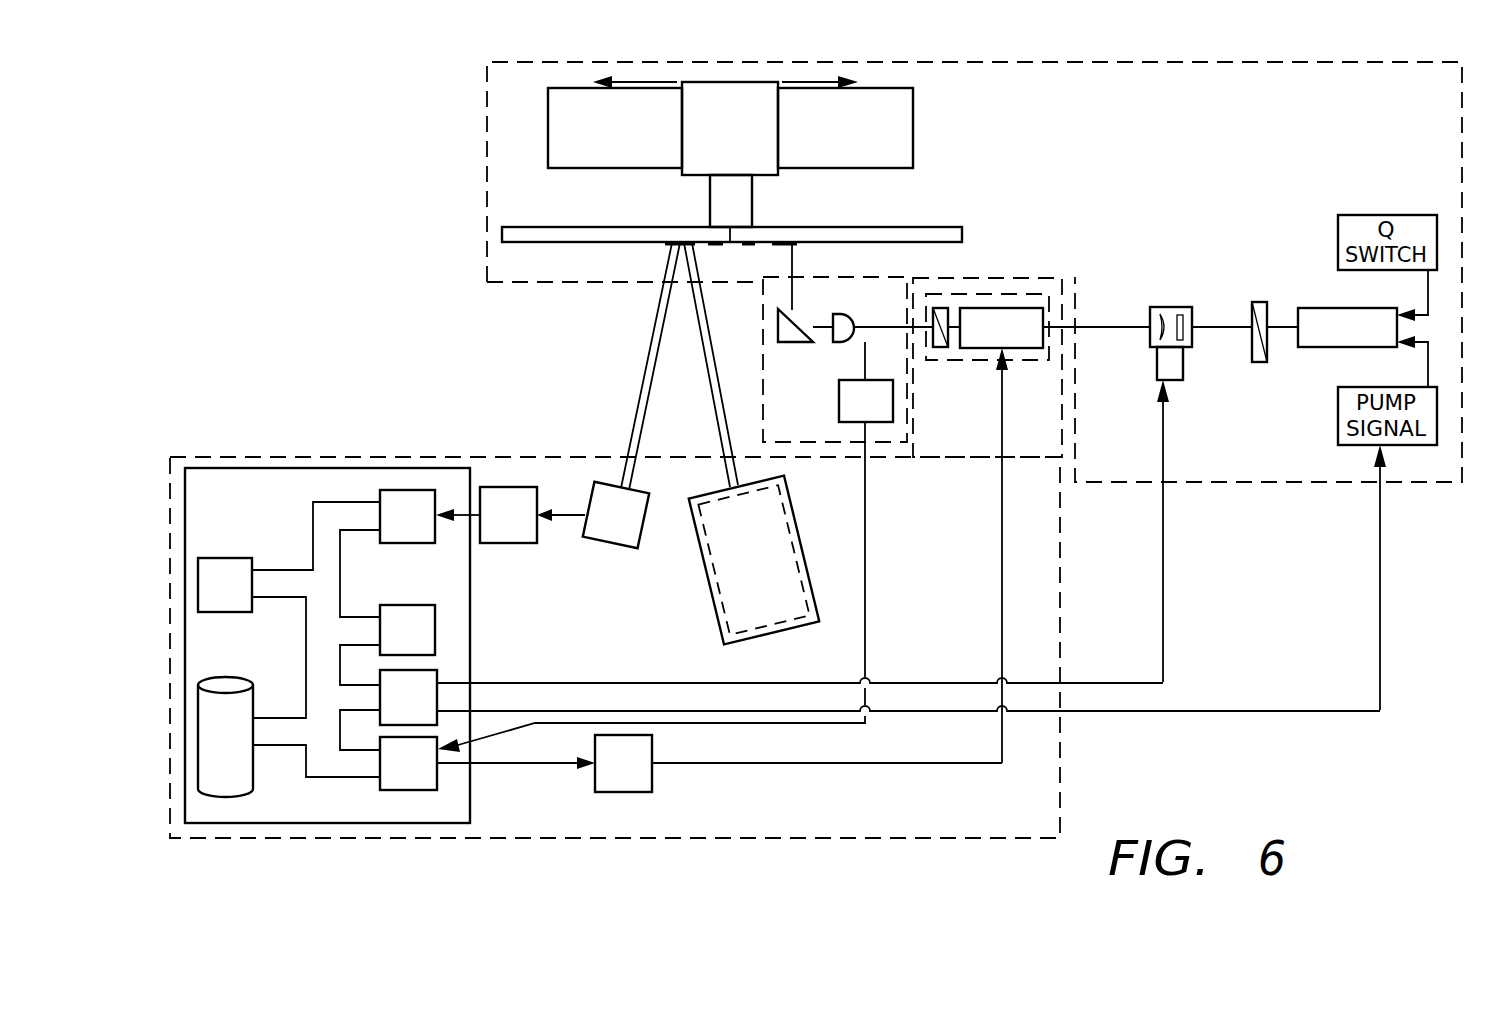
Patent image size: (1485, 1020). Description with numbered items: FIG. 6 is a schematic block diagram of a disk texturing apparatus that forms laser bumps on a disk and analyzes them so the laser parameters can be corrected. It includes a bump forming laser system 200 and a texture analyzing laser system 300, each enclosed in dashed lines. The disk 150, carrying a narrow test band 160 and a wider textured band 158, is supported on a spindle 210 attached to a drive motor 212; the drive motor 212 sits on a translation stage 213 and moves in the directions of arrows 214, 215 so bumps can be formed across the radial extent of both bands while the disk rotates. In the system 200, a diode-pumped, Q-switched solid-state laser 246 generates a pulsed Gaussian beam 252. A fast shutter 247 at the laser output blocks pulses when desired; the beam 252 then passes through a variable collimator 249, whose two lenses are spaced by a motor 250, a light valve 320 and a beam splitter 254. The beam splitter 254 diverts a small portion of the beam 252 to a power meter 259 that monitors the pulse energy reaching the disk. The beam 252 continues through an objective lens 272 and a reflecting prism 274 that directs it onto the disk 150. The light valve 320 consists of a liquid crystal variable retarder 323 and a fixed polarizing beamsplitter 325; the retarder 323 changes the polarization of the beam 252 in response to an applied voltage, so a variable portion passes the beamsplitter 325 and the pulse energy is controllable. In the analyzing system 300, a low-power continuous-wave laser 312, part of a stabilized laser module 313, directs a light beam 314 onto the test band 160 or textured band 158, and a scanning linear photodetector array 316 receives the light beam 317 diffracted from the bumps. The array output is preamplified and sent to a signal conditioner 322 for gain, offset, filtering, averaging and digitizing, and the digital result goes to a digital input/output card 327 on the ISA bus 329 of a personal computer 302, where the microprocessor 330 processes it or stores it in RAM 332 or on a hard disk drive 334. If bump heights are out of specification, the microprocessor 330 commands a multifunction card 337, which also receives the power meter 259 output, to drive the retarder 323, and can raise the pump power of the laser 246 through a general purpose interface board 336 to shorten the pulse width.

The disk 150 is at (907, 226).
The textured band 158 is at (663, 245).
The test band 160 is at (738, 253).
The bump forming laser system 200 is at (488, 187).
The spindle 210 is at (752, 198).
The drive motor 212 is at (752, 143).
The translation stage 213 is at (852, 143).
The arrow 214 is at (641, 80).
The arrow 215 is at (805, 80).
The solid-state laser 246 is at (1367, 308).
The fast shutter 247 is at (1253, 300).
The variable collimator 249 is at (1170, 307).
The motor 250 is at (1183, 368).
The laser beam 252 is at (793, 280).
The beam splitter 254 is at (863, 347).
The power meter 259 is at (840, 410).
The objective lens 272 is at (843, 345).
The reflecting prism 274 is at (793, 345).
The texture analyzing laser system 300 is at (538, 455).
The personal computer 302 is at (250, 514).
The laser 312 is at (803, 580).
The laser module 313 is at (773, 633).
The laser light beam 314 is at (713, 360).
The scanning linear photodetector array 316 is at (602, 543).
The diffracted light beam 317 is at (643, 378).
The light valve 320 is at (972, 364).
The signal conditioner 322 is at (505, 543).
The liquid crystal variable retarder 323 is at (1020, 308).
The fixed polarizing beamsplitter 325 is at (942, 308).
The digital input/output card 327 is at (400, 490).
The ISA bus 329 is at (322, 512).
The microprocessor 330 is at (389, 605).
The RAM 332 is at (213, 612).
The hard disk drive 334 is at (230, 798).
The general purpose interface board 336 is at (437, 668).
The multifunction input/output card 337 is at (410, 784).